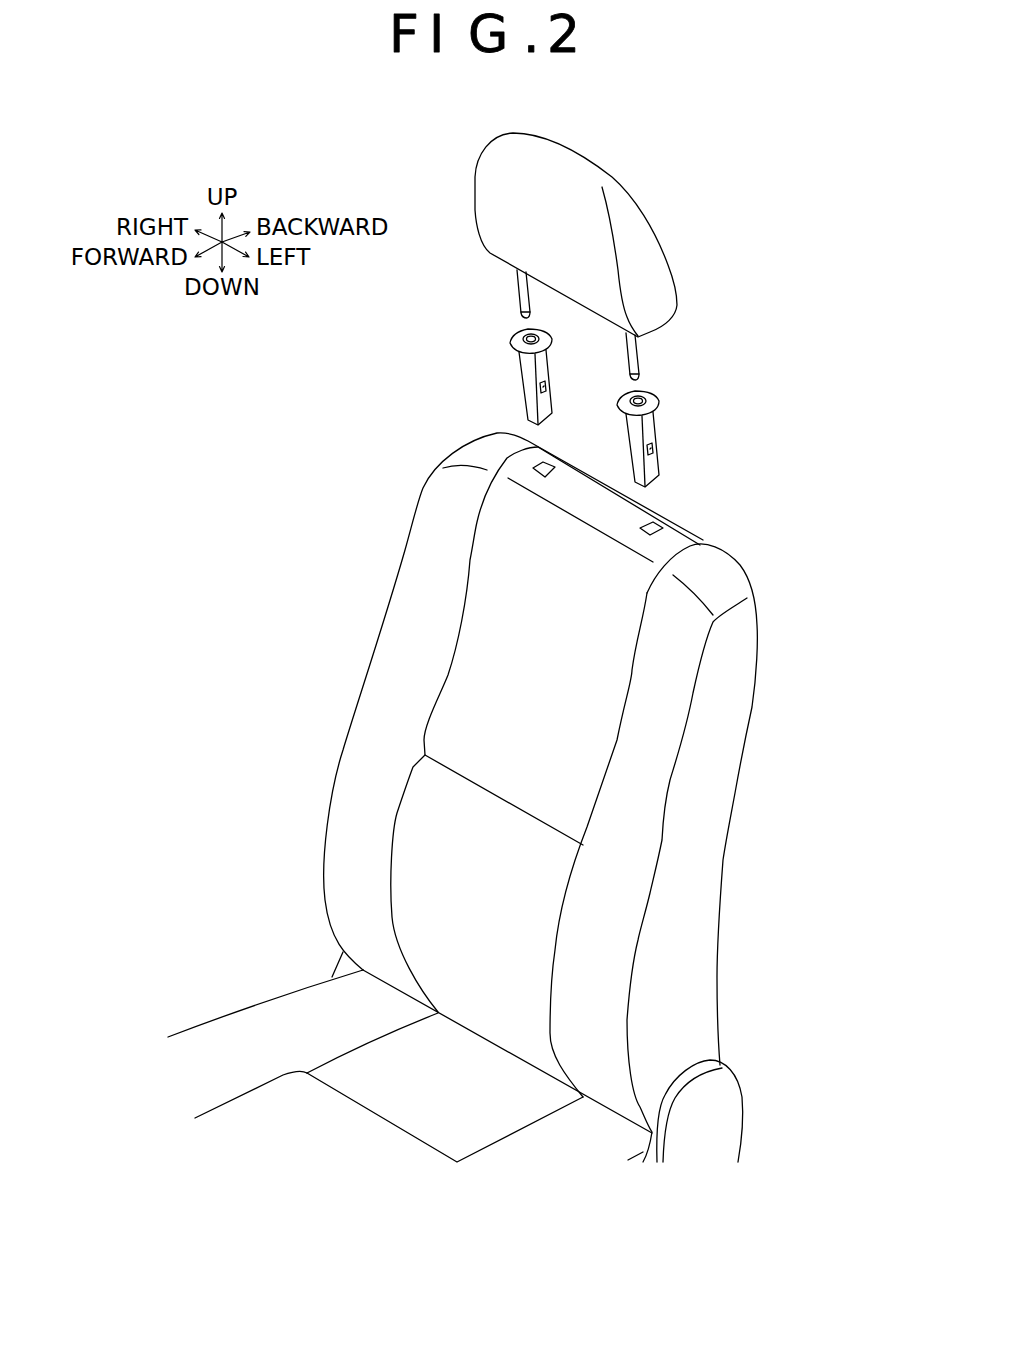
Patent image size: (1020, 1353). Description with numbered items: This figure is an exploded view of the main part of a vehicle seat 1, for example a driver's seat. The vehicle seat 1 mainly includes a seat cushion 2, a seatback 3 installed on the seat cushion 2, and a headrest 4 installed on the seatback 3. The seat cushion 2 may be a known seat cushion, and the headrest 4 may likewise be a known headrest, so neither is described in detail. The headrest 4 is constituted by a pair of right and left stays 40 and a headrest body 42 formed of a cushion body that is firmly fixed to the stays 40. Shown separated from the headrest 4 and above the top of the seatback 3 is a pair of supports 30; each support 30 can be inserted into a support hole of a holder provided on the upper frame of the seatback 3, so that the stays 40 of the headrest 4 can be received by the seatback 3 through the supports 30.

The vehicle seat 1 is at (233, 597).
The seat cushion 2 is at (251, 988).
The seatback 3 is at (363, 609).
The headrest 4 is at (454, 160).
The headrest body 42 is at (502, 208).
The stays 40 is at (518, 290).
The support 30 is at (507, 376).